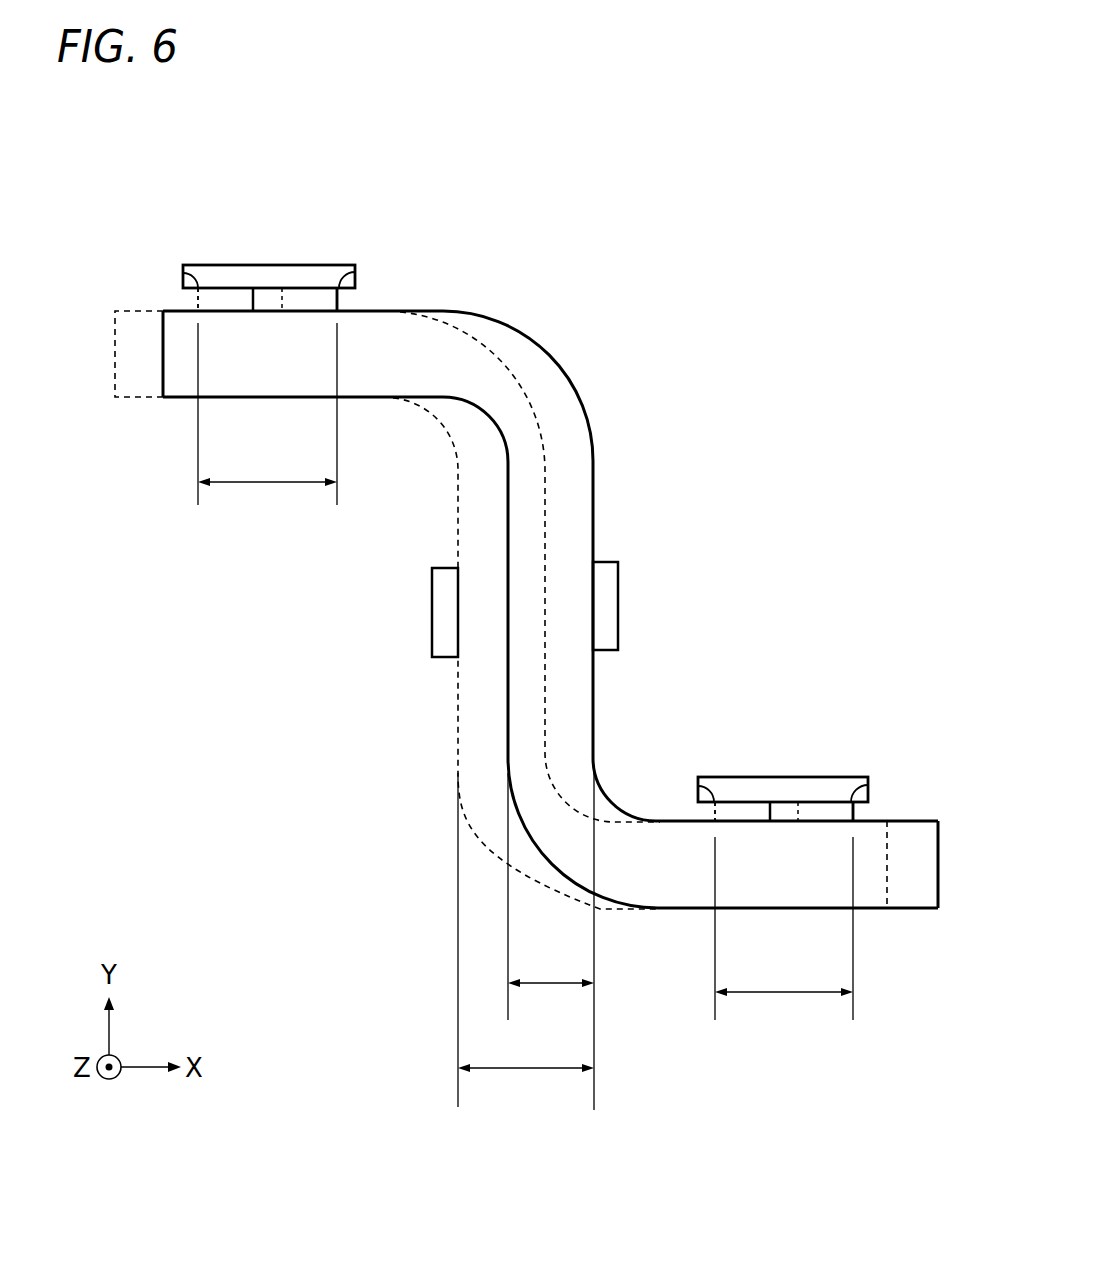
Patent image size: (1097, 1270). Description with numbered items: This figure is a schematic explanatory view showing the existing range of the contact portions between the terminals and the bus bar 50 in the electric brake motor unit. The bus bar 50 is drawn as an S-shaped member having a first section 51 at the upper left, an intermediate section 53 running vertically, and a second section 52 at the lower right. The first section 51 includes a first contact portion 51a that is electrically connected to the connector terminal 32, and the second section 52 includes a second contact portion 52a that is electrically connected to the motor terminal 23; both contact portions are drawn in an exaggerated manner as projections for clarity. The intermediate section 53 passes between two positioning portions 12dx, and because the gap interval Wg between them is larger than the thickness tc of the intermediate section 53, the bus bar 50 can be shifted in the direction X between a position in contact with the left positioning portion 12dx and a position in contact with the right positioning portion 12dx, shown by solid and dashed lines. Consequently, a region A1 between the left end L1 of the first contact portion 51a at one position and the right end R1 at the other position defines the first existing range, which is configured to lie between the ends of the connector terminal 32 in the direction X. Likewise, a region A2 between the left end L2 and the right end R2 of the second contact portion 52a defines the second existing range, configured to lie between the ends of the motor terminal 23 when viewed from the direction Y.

The bus bar 50 is at (546, 350).
The first section 51 is at (183, 383).
The first contact portion 51a is at (305, 298).
The second section 52 is at (875, 892).
The second contact portion 52a is at (818, 808).
The intermediate section 53 is at (570, 442).
The connector terminal 32 is at (222, 277).
The motor terminal 23 is at (758, 792).
The positioning portion 12dx is at (445, 607).
The end on the left side of the first contact portion L1 is at (183, 270).
The end on the right side of the first contact portion R1 is at (355, 270).
The end on the left side of the second contact portion L2 is at (713, 797).
The end on the right side of the second contact portion R2 is at (868, 784).
The region between ends L1 and R1 A1 is at (267, 497).
The region between ends L2 and R2 A2 is at (784, 1010).
The thickness of the intermediate section tc is at (551, 941).
The gap interval Wg is at (526, 940).